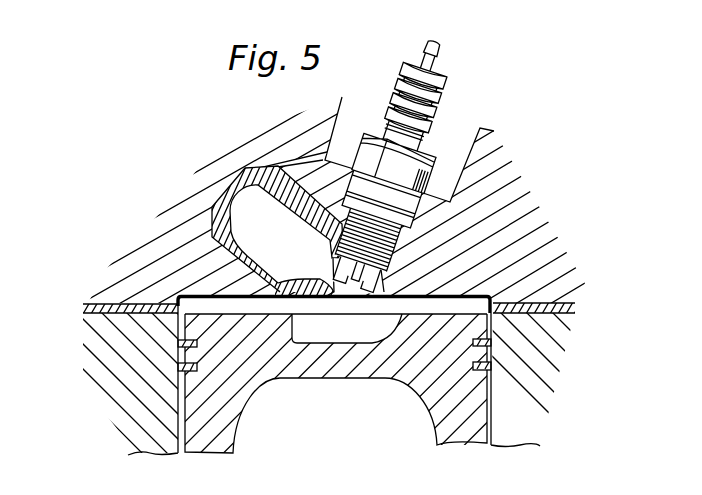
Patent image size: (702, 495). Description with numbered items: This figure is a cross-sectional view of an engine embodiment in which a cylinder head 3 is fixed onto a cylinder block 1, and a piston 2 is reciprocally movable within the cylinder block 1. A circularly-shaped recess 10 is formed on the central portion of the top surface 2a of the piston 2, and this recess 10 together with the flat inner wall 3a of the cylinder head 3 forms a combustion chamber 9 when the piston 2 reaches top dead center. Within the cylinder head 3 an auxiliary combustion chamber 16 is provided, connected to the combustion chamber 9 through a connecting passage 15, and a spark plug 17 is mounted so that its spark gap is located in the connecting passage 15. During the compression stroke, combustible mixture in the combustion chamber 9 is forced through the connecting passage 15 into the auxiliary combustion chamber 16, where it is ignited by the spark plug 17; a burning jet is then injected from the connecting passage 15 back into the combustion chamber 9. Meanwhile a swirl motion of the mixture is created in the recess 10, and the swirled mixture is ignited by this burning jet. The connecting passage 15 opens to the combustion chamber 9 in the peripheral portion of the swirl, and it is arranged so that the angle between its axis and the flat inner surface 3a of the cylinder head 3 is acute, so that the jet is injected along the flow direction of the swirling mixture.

The cylinder block 1 is at (520, 393).
The piston 2 is at (453, 423).
The top surface of the piston 2a is at (432, 304).
The cylinder head 3 is at (523, 232).
The inner wall of the cylinder head 3a is at (190, 303).
The combustion chamber 9 is at (273, 307).
The recess 10 is at (303, 343).
The connecting passage 15 is at (345, 292).
The auxiliary combustion chamber 16 is at (282, 233).
The spark plug 17 is at (440, 72).